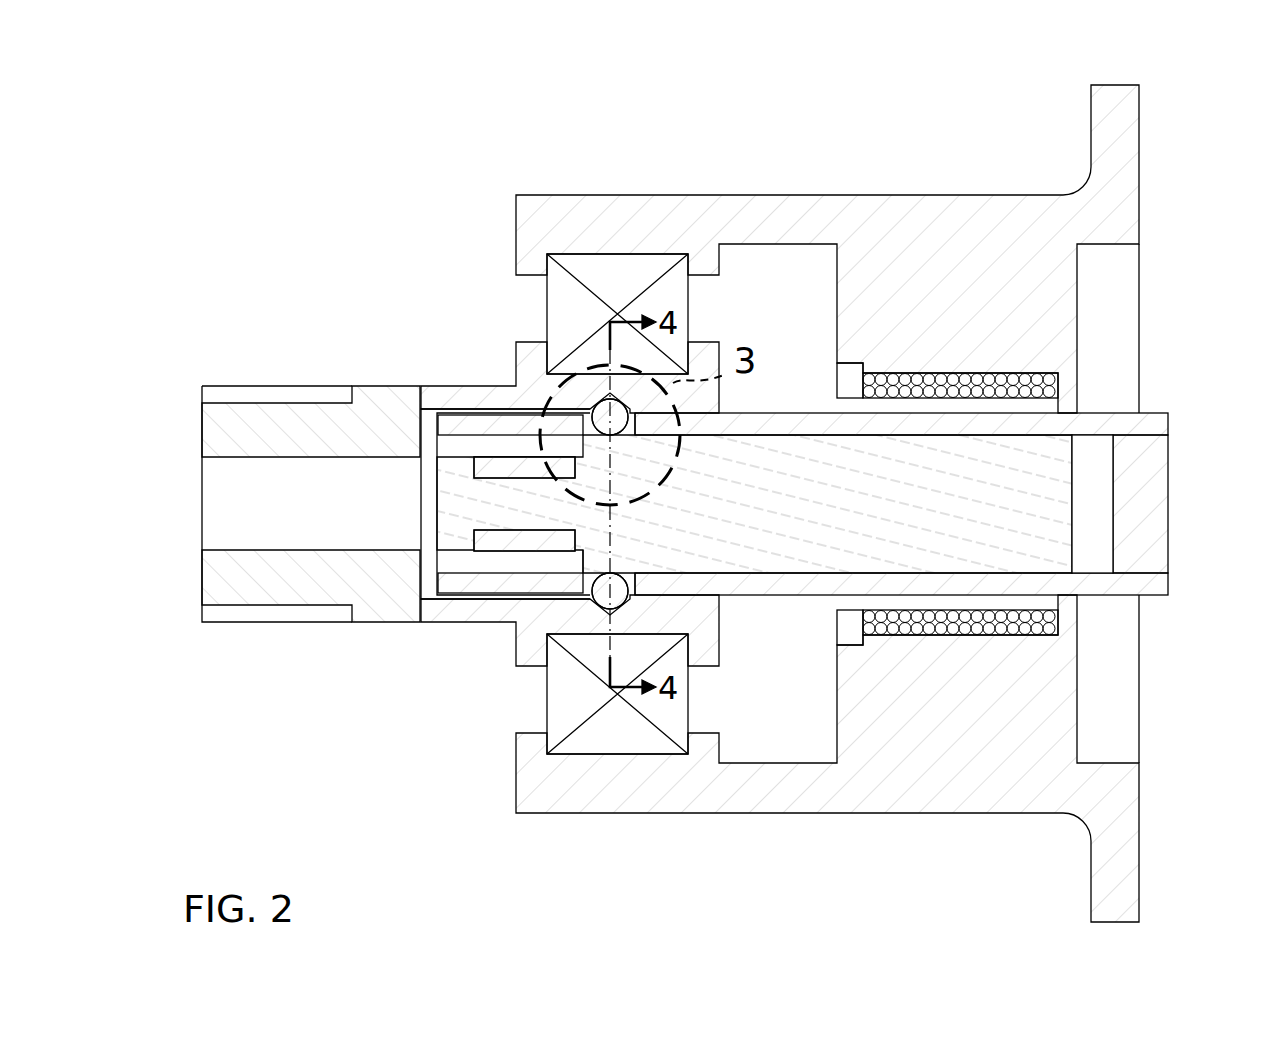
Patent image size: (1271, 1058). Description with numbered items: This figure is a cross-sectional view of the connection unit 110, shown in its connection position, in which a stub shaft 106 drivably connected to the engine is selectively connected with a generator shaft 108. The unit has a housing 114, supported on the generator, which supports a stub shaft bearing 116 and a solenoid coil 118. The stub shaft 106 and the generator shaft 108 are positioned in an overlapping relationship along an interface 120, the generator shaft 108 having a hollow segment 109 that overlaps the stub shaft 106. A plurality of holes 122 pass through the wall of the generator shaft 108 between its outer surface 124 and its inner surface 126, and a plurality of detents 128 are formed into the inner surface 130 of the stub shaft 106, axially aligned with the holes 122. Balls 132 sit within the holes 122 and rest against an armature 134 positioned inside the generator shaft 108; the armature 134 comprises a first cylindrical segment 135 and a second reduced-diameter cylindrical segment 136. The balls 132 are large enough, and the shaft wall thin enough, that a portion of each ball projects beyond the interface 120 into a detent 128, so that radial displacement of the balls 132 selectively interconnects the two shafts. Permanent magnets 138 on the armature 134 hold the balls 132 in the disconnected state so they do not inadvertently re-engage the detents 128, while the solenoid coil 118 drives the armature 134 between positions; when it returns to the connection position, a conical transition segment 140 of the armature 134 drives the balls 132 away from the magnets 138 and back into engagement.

The stub shaft 106 is at (201, 426).
The generator shaft 108 is at (1168, 438).
The hollow segment 109 is at (786, 411).
The connection unit 110 is at (311, 236).
The housing 114 is at (809, 813).
The stub shaft bearing 116 is at (615, 282).
The solenoid coil 118 is at (968, 372).
The interface 120 is at (497, 600).
The holes 122 is at (652, 430).
The outer surface 124 is at (468, 407).
The inner surface 126 is at (440, 425).
The detents 128 is at (600, 398).
The inner surface 130 is at (414, 600).
The balls 132 is at (614, 430).
The armature 134 is at (1112, 522).
The first cylindrical segment 135 is at (1043, 445).
The second reduced-diameter cylindrical segment 136 is at (460, 550).
The permanent magnets 138 is at (520, 475).
The conical transition segment 140 is at (583, 565).